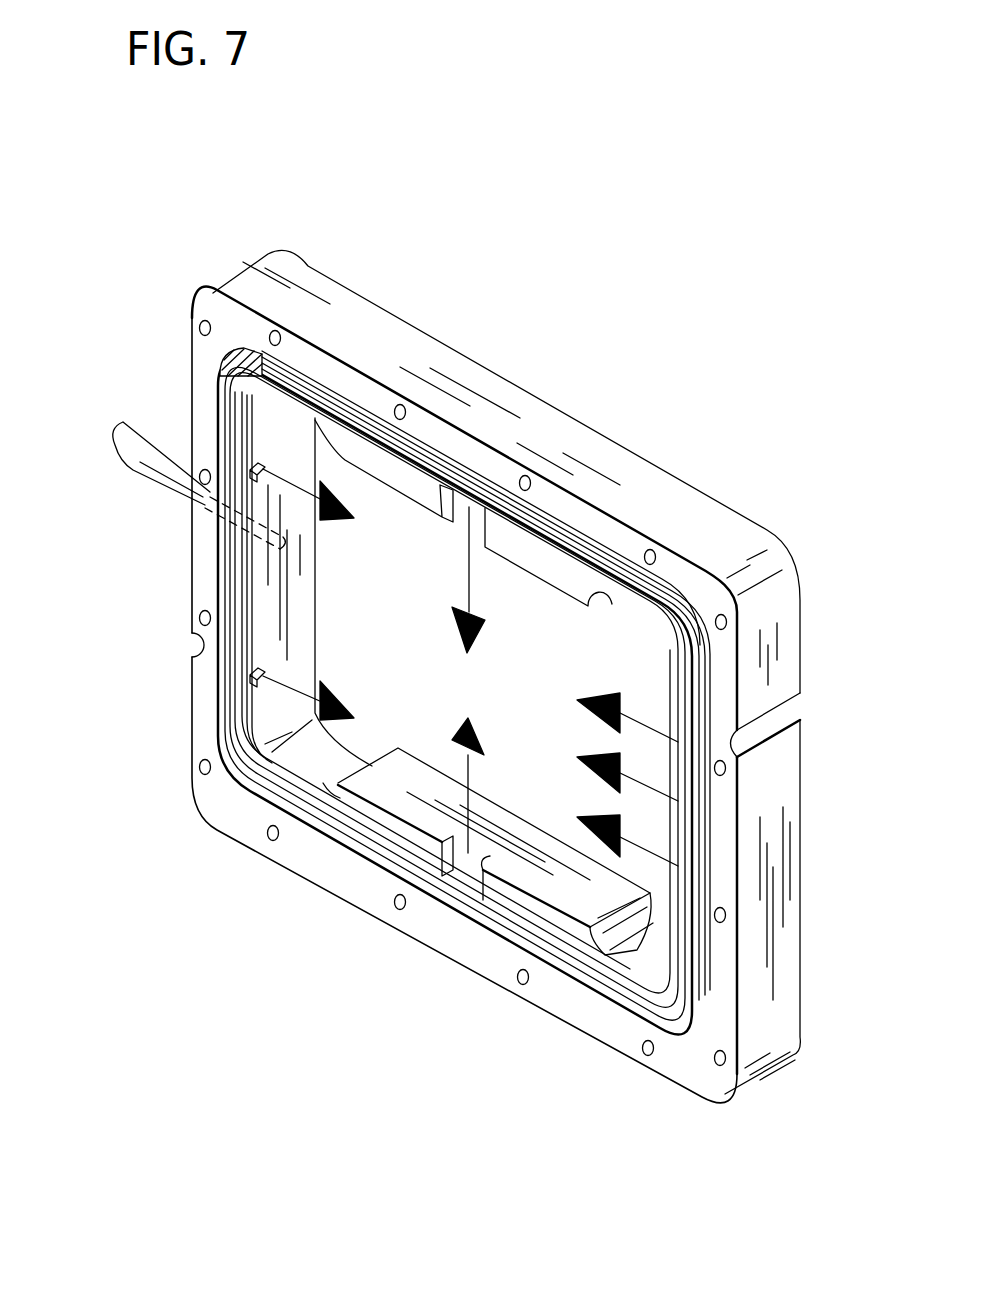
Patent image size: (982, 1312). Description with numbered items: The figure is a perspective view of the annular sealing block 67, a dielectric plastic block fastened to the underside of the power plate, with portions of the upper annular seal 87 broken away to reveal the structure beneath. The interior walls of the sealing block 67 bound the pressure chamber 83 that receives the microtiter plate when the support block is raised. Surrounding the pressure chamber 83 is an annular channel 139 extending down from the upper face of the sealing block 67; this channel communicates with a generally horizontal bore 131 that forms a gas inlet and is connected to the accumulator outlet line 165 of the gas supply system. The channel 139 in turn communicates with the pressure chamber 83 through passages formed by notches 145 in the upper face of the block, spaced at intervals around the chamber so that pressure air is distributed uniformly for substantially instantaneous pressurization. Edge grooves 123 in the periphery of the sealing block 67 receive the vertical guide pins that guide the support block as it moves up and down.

The sealing block 67 is at (798, 990).
The upper annular seal 87 is at (222, 372).
The annular channel 139 is at (370, 437).
The notches 145 is at (263, 466).
The pressure chamber 83 is at (529, 691).
The edge grooves 123 is at (188, 640).
The bore 131 is at (203, 507).
The accumulator outlet line 165 is at (127, 478).